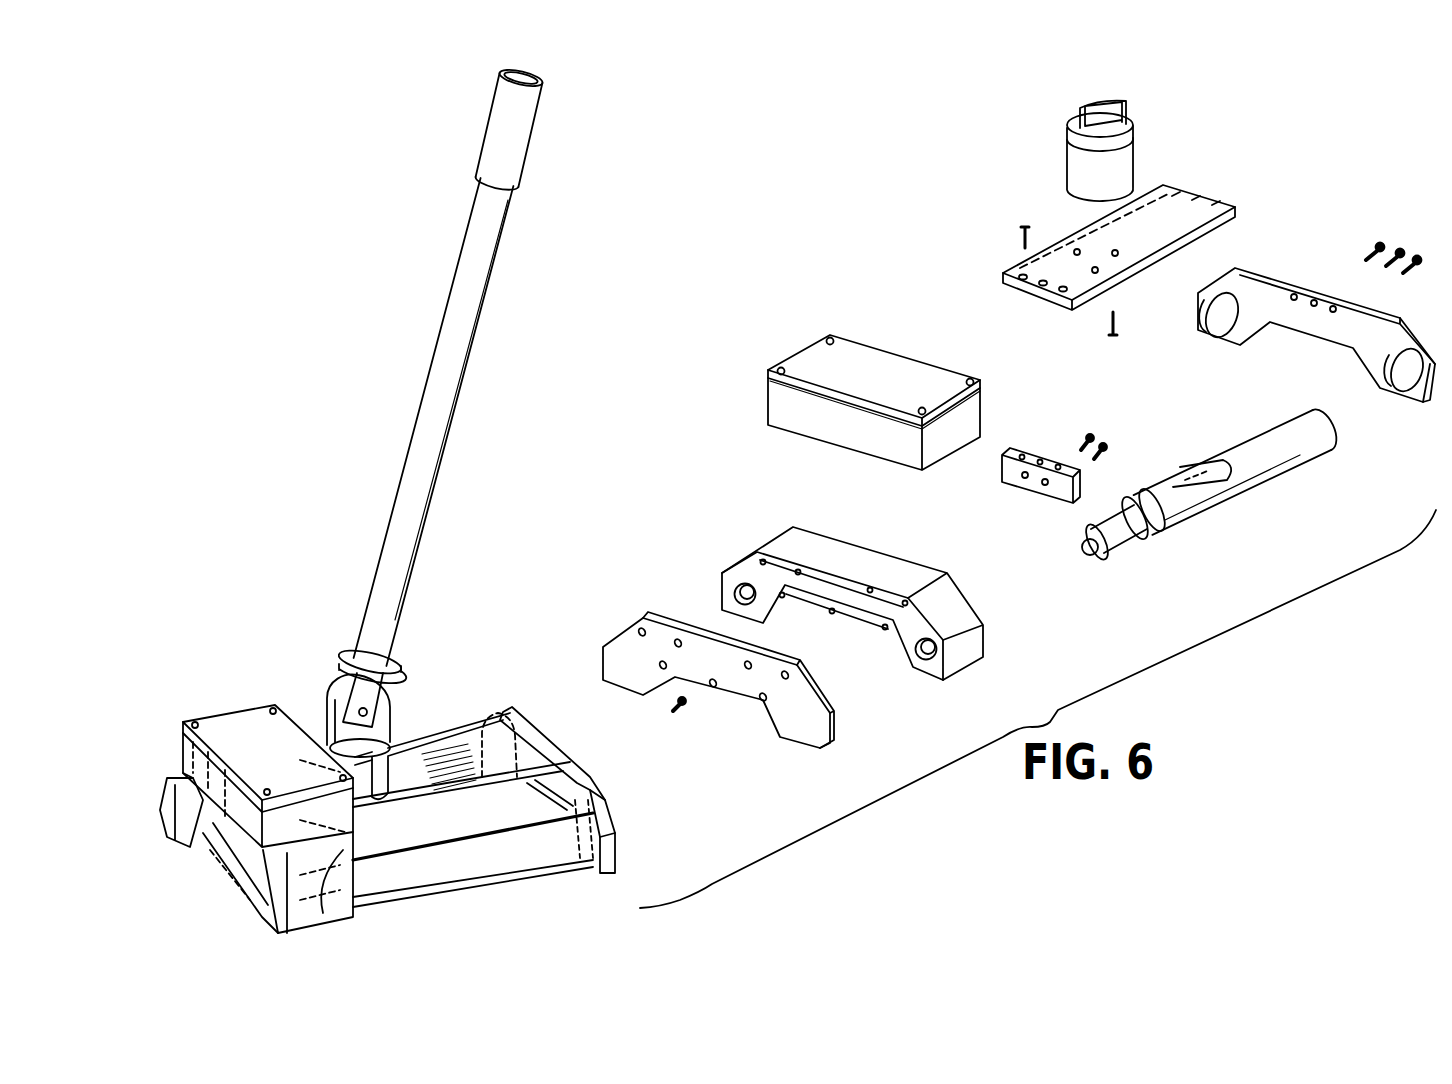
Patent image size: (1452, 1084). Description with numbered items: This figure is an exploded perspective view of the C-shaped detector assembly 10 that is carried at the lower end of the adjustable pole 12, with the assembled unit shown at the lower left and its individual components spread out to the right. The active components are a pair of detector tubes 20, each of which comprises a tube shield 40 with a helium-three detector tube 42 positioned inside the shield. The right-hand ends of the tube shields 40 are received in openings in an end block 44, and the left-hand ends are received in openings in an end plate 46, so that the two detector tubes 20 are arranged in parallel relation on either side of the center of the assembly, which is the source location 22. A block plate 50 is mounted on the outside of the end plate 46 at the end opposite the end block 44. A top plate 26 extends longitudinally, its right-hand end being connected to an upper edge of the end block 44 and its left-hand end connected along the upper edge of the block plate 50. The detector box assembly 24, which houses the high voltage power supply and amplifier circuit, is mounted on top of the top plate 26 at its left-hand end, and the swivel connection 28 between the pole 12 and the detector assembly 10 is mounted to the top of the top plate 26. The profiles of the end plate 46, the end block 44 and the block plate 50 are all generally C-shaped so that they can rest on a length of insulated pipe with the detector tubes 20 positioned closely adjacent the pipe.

The detector assembly 10 is at (431, 734).
The pole 12 is at (437, 322).
The detector tubes 20 is at (911, 648).
The source location 22 is at (418, 782).
The detector box assembly 24 is at (247, 717).
The top plate 26 is at (1085, 232).
The swivel connection 28 is at (392, 702).
The tube shields 40 is at (1243, 432).
The helium-3 detector tubes 42 is at (1126, 552).
The end block 44 is at (1395, 392).
The end plate 46 is at (970, 614).
The block plate 50 is at (780, 718).